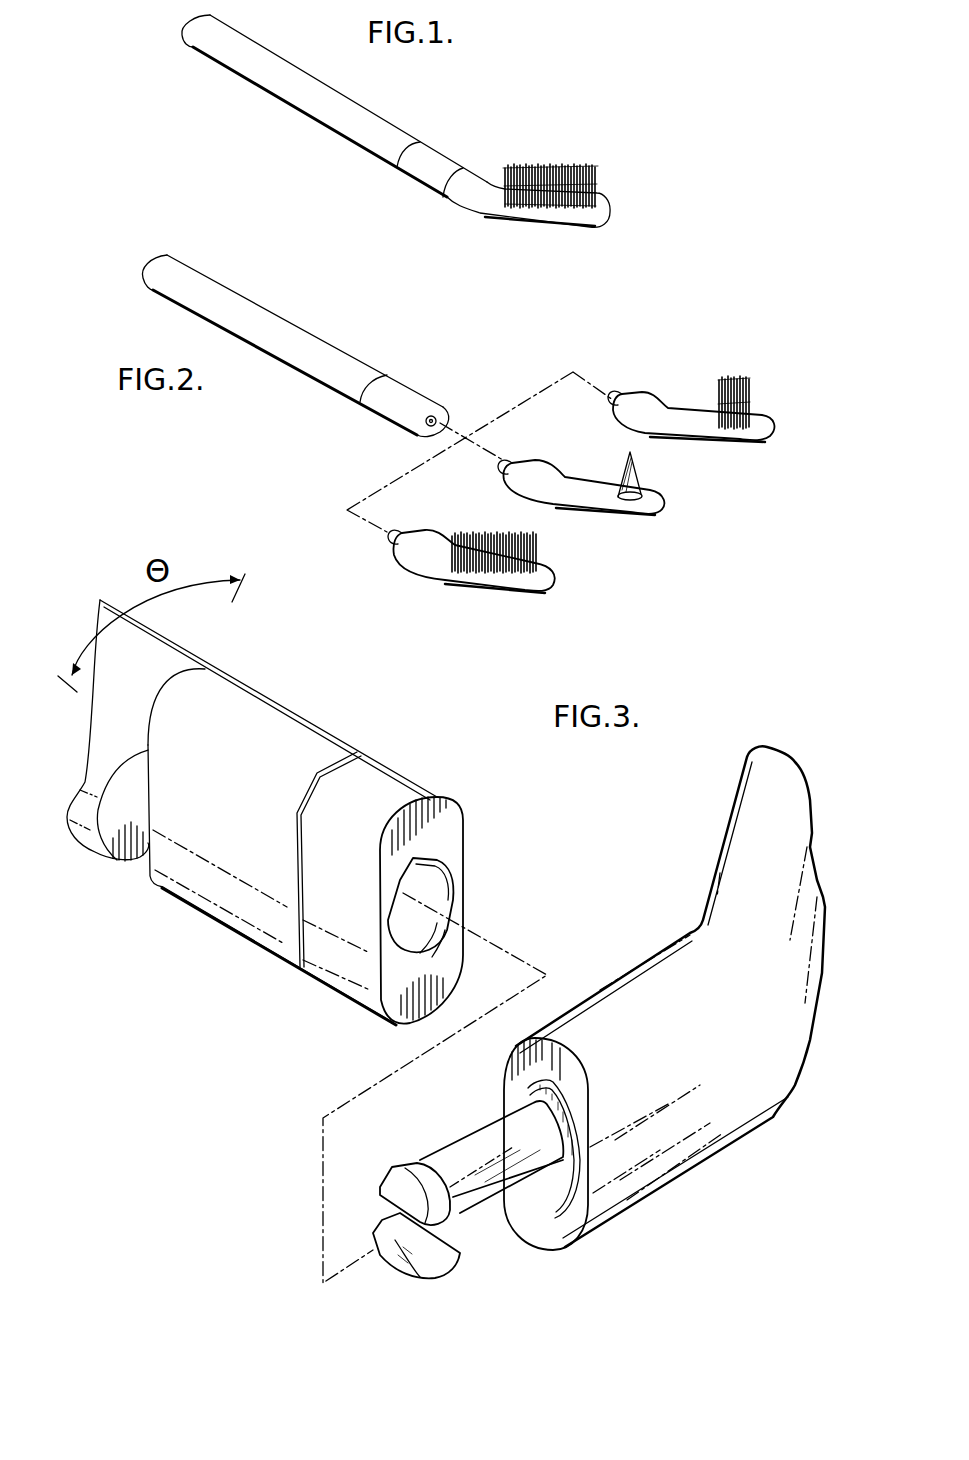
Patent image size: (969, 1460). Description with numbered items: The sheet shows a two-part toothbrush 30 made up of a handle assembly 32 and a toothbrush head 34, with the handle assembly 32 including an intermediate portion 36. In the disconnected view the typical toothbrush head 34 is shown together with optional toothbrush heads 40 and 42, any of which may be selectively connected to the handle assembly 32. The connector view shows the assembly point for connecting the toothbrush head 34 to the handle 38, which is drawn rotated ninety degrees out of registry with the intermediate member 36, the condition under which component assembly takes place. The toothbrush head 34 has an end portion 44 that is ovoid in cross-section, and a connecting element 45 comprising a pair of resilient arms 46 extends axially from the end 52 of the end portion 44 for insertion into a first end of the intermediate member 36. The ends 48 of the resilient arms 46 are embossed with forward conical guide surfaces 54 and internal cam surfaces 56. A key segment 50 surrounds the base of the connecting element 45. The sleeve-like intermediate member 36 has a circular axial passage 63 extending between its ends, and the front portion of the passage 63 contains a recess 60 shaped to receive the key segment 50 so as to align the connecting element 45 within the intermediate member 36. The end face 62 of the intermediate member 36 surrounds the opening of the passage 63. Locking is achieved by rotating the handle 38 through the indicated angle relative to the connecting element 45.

In FIG. 1, the toothbrush 30 is at (428, 152).
In FIG. 1, the handle assembly 32 is at (420, 196).
In FIG. 2, the handle assembly 32 is at (368, 422).
In FIG. 1, the toothbrush head 34 is at (540, 232).
In FIG. 2, the toothbrush head 34 is at (483, 593).
In FIG. 3, the toothbrush head 34 is at (664, 1027).
In FIG. 1, the intermediate portion 36 is at (452, 152).
In FIG. 3, the intermediate portion 36 is at (303, 812).
In FIG. 3, the handle 38 is at (87, 850).
In FIG. 2, the optional toothbrush head 40 is at (593, 517).
In FIG. 2, the optional toothbrush head 42 is at (693, 445).
In FIG. 3, the end portion 44 is at (625, 973).
In FIG. 3, the connecting element 45 is at (454, 1208).
In FIG. 3, the resilient arms 46 is at (493, 1180).
In FIG. 3, the ends of the resilient arms 48 is at (411, 1228).
In FIG. 3, the key segment 50 is at (510, 1092).
In FIG. 3, the end of the end portion 52 is at (573, 1223).
In FIG. 3, the forward conical guide surfaces 54 is at (405, 1177).
In FIG. 3, the internal cam surfaces 56 is at (397, 1263).
In FIG. 3, the recess 60 is at (433, 938).
In FIG. 3, the neck end face 62 is at (447, 828).
In FIG. 3, the circular axial passage 63 is at (427, 890).